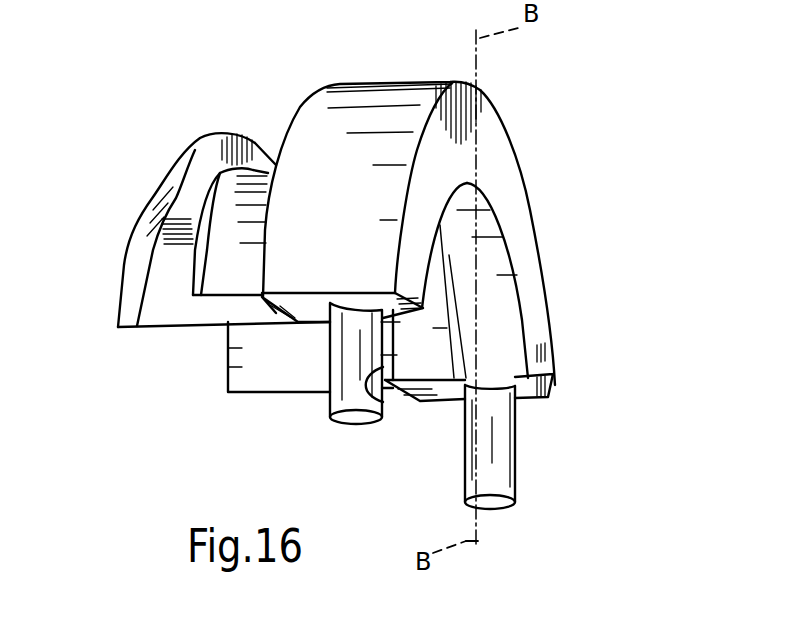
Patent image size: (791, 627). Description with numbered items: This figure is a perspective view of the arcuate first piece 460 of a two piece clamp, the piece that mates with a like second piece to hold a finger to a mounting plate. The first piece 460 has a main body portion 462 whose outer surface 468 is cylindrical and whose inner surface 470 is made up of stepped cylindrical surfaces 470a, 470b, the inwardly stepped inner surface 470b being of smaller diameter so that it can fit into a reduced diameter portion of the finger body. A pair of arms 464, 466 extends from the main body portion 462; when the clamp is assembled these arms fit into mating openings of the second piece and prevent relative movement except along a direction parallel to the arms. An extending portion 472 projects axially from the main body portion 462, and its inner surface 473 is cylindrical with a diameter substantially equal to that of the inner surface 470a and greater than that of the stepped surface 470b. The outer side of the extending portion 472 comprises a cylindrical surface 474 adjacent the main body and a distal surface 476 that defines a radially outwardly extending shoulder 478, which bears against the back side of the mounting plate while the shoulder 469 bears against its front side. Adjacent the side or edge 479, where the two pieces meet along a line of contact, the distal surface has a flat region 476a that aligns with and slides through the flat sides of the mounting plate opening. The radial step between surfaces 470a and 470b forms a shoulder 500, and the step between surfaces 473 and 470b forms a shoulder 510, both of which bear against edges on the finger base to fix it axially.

The arcuate first piece 460 is at (90, 265).
The main body portion 462 is at (397, 125).
The arm 464 is at (465, 468).
The arm 466 is at (343, 402).
The outer surface 468 is at (341, 138).
The shoulder 469 is at (253, 322).
The inner surface 470 is at (505, 343).
The inner surface 470a is at (508, 310).
The inwardly stepped inner surface 470b is at (437, 331).
The extending portion 472 is at (267, 410).
The inner surface 473 is at (230, 340).
The cylindrical surface 474 is at (262, 156).
The distal surface 476 is at (203, 130).
The flat distal surface 476a is at (163, 291).
The shoulder 478 is at (257, 188).
The side or edge 479 is at (163, 330).
The shoulder 500 is at (457, 358).
The shoulder 510 is at (378, 404).